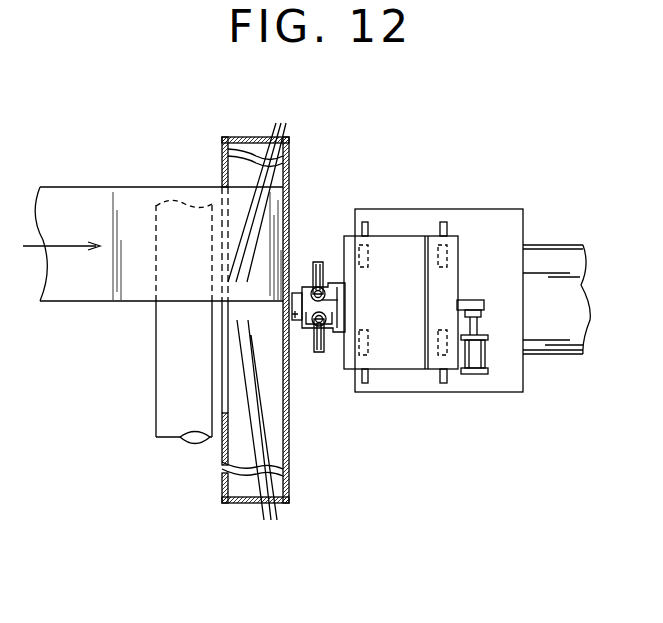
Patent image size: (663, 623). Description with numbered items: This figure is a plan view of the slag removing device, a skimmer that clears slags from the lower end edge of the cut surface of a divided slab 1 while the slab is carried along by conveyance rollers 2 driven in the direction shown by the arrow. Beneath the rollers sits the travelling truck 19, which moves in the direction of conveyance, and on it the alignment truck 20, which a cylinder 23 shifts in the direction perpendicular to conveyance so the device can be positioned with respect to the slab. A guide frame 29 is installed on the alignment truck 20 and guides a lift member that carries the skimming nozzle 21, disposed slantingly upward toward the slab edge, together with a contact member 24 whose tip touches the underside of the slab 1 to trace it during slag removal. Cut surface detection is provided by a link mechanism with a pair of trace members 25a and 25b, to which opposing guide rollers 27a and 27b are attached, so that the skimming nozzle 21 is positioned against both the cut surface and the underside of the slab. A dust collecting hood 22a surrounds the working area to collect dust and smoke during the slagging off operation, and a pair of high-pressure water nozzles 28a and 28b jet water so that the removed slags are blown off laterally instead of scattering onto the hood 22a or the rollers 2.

The divided slab 1 is at (102, 197).
The conveyance rollers 2 is at (165, 343).
The travelling truck 19 is at (504, 228).
The alignment truck 20 is at (417, 242).
The skimming nozzle 21 is at (295, 322).
The dust collecting hood 22a is at (289, 171).
The cylinder 23 is at (476, 362).
The contact member 24 is at (308, 268).
The trace member 25a is at (321, 355).
The trace member 25b is at (322, 262).
The guide roller 27a is at (340, 332).
The guide roller 27b is at (330, 280).
The high-pressure water nozzle 28a is at (273, 125).
The high-pressure water nozzle 28b is at (279, 508).
The guide frame 29 is at (345, 303).